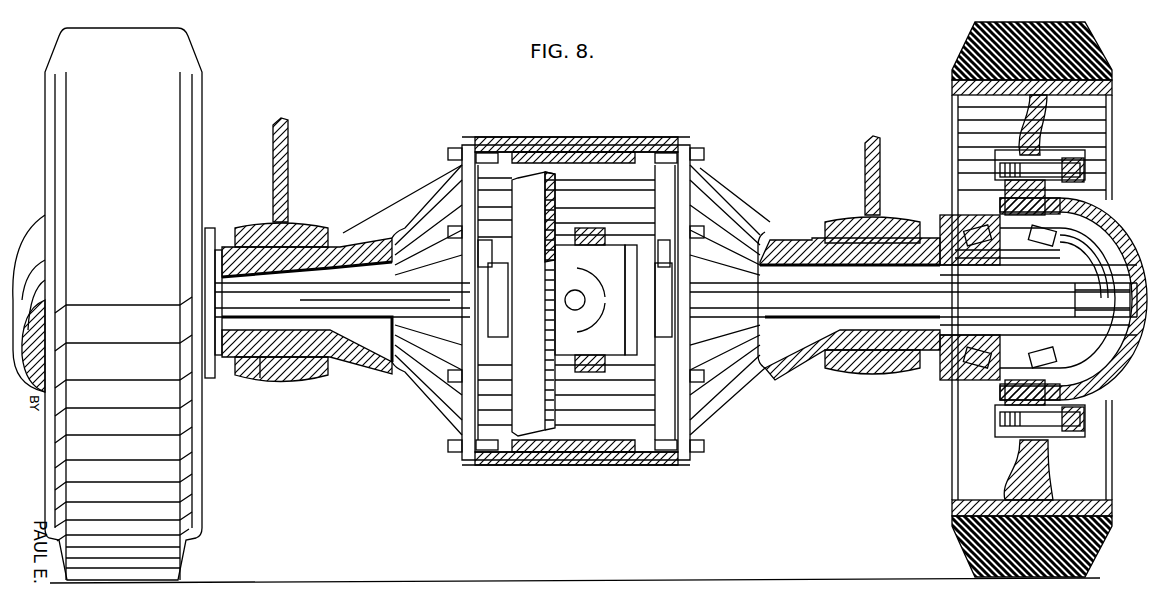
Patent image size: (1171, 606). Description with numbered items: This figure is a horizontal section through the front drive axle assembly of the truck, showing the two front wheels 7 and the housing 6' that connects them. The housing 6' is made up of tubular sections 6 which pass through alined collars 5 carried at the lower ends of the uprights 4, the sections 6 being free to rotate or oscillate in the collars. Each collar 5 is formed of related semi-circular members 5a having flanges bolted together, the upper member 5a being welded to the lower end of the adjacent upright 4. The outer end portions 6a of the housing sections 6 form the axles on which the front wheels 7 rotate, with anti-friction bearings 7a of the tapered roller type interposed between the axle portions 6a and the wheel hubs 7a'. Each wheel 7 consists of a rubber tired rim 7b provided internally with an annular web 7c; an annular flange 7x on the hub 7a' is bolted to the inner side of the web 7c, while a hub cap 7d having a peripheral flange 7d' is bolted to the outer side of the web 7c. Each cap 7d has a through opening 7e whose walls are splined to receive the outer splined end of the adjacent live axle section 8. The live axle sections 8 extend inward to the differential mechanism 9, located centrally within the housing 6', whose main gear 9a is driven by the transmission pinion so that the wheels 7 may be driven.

The upright 4 is at (288, 178).
The collar 5 is at (275, 382).
The semi-circular member 5a is at (313, 222).
The tubular section 6 is at (581, 324).
The housing 6' is at (556, 302).
The outer end portion 6a is at (1010, 350).
The front wheel 7 is at (197, 466).
The anti-friction bearing 7a is at (991, 315).
The wheel hub 7a' is at (993, 384).
The rubber tired rim 7b is at (957, 92).
The annular web 7c is at (1022, 115).
The hub cap 7d is at (1053, 282).
The peripheral flange 7d' is at (1048, 433).
The through opening 7e is at (1105, 322).
The annular flange 7x is at (1003, 440).
The live axle section 8 is at (363, 318).
The differential mechanism 9 is at (576, 301).
The main gear 9a is at (555, 212).